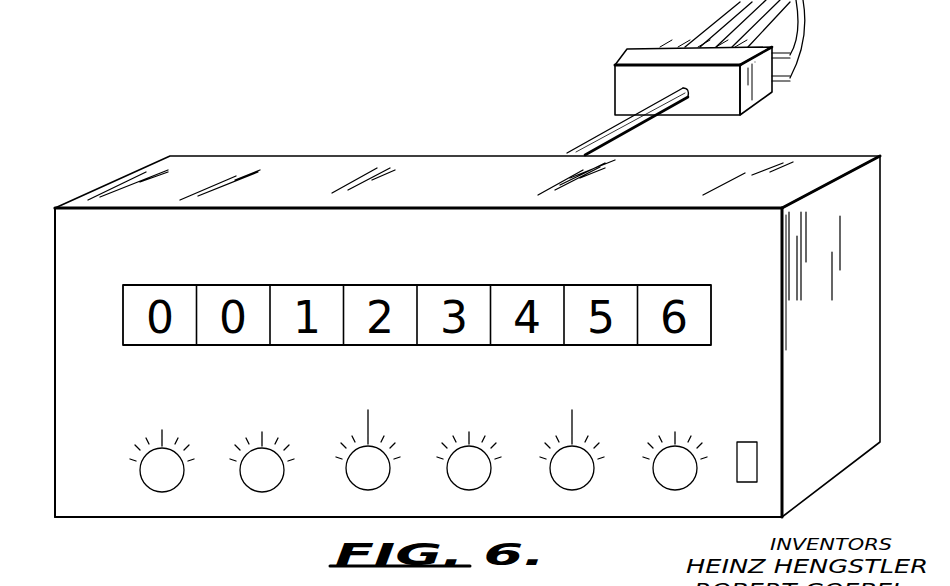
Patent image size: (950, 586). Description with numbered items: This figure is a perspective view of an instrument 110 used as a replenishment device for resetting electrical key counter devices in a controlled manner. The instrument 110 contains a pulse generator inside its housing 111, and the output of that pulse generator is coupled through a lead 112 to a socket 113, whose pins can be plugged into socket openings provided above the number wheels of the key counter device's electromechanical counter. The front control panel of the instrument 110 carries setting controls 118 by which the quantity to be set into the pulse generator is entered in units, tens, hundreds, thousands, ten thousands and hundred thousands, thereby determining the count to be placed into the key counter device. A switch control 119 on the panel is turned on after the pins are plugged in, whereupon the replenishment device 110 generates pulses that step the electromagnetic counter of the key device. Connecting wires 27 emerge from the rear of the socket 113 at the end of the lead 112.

The connecting wires 27 is at (324, 4).
The instrument 110 is at (442, 134).
The housing 111 is at (300, 143).
The lead 112 is at (595, 150).
The socket 113 is at (636, 56).
The setting knobs 118 is at (262, 492).
The switch control 119 is at (757, 462).